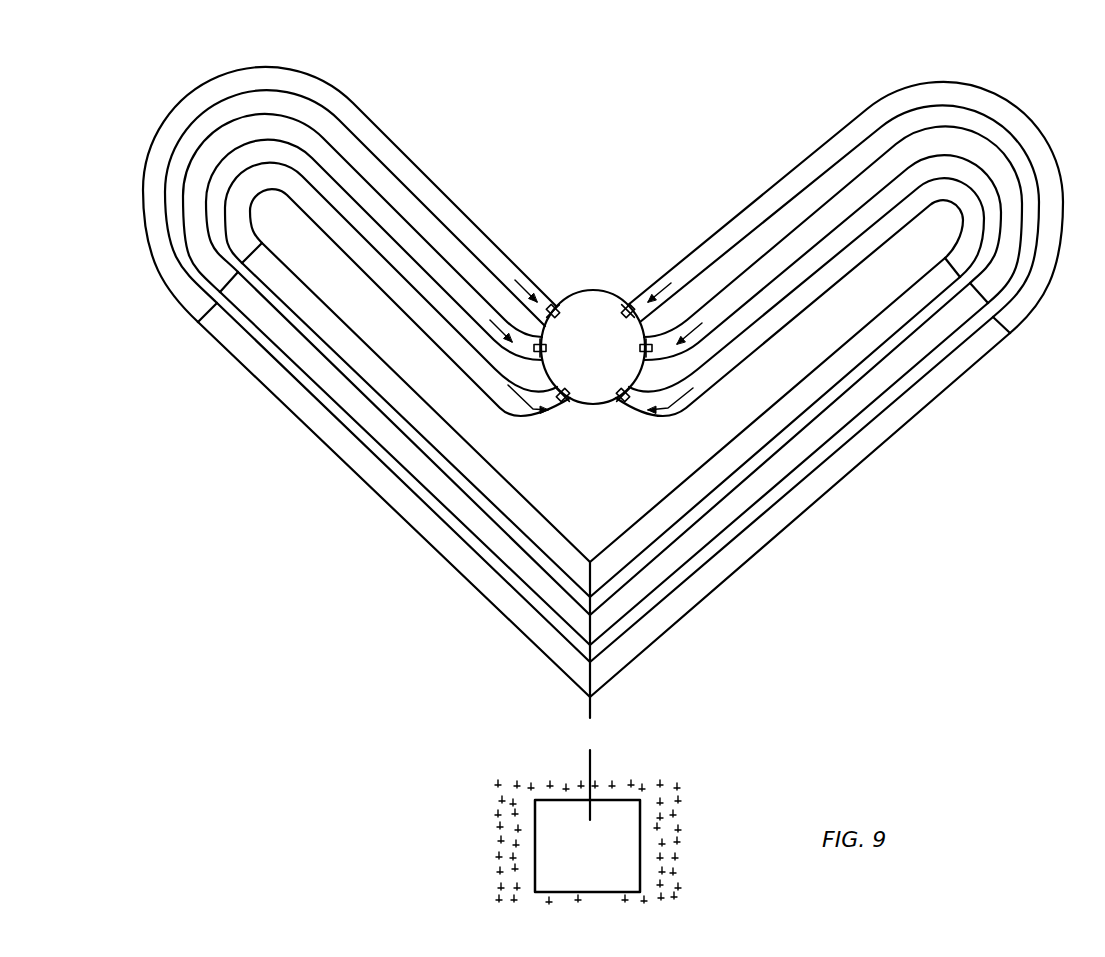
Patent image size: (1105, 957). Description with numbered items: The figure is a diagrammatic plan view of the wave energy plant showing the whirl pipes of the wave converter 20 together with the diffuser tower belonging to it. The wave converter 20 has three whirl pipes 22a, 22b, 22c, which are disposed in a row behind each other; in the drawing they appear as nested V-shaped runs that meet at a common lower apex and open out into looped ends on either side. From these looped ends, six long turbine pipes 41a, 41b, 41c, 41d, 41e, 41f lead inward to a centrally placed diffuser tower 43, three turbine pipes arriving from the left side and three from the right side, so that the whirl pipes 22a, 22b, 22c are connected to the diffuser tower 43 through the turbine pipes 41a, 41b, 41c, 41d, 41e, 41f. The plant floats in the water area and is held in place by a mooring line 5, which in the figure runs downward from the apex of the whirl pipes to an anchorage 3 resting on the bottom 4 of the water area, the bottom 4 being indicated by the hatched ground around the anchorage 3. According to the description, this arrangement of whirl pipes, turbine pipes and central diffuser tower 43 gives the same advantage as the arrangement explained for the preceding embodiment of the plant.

The anchorage 3 is at (633, 847).
The bottom 4 is at (604, 931).
The mooring line 5 is at (588, 710).
The wave converter 20 is at (823, 528).
The whirl pipe 22a is at (250, 358).
The whirl pipe 22b is at (420, 468).
The whirl pipe 22c is at (500, 485).
The turbine pipe 41a is at (338, 97).
The turbine pipe 41b is at (370, 205).
The turbine pipe 41c is at (455, 335).
The turbine pipe 41d is at (723, 245).
The turbine pipe 41e is at (833, 223).
The turbine pipe 41f is at (897, 217).
The diffuser tower 43 is at (612, 290).